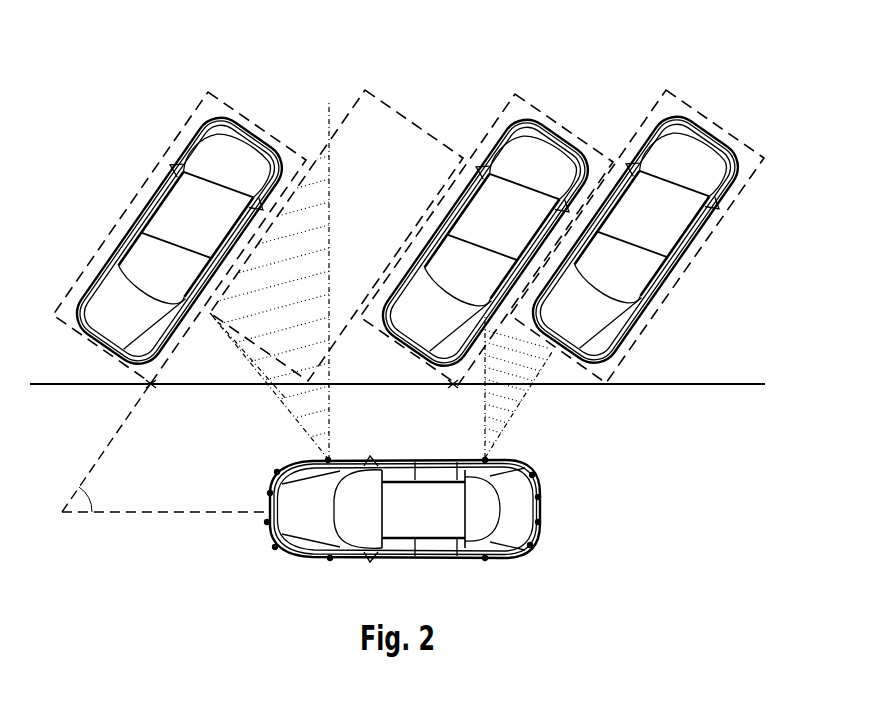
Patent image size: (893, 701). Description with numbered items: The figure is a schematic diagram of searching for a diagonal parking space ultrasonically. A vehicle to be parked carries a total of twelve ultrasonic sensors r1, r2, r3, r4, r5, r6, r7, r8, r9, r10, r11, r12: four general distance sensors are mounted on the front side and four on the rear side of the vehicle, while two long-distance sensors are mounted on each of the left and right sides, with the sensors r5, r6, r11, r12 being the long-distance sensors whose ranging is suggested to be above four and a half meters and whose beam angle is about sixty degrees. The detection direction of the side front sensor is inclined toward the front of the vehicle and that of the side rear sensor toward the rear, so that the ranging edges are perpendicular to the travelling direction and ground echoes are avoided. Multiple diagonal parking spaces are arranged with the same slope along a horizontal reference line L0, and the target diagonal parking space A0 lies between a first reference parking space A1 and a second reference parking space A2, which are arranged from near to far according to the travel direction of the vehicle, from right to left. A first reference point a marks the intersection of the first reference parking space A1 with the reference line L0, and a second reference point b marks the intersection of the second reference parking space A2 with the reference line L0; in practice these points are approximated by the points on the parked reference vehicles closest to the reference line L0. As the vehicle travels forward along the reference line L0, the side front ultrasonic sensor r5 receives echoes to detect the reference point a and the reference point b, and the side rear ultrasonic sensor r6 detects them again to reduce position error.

The target diagonal parking space A0 is at (388, 102).
The first reference parking space A1 is at (527, 90).
The second reference parking space A2 is at (127, 213).
The reference line L0 is at (668, 385).
The first reference point a is at (459, 393).
The second reference point b is at (156, 394).
The ultrasonic sensor r1 is at (266, 558).
The ultrasonic sensor r2 is at (257, 532).
The ultrasonic sensor r3 is at (257, 491).
The ultrasonic sensor r4 is at (266, 465).
The side front ultrasonic sensor r5 is at (340, 451).
The side rear ultrasonic sensor r6 is at (472, 453).
The ultrasonic sensor r7 is at (542, 466).
The ultrasonic sensor r8 is at (548, 489).
The ultrasonic sensor r9 is at (546, 532).
The ultrasonic sensor r10 is at (545, 557).
The long-distance ultrasonic sensor r11 is at (468, 570).
The long-distance ultrasonic sensor r12 is at (345, 569).